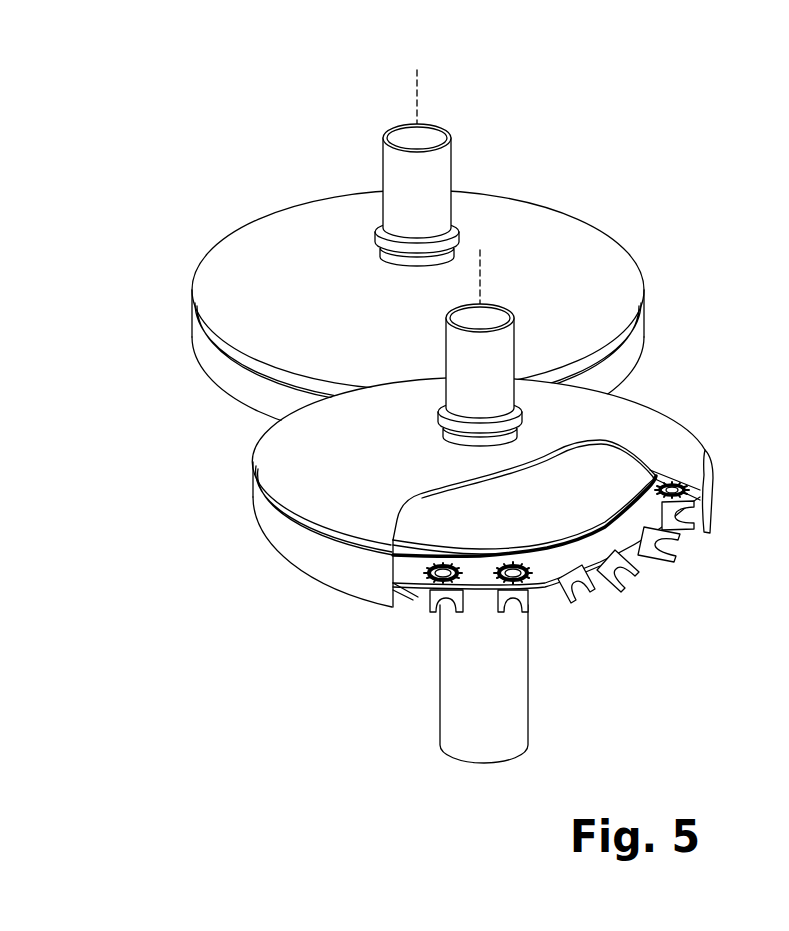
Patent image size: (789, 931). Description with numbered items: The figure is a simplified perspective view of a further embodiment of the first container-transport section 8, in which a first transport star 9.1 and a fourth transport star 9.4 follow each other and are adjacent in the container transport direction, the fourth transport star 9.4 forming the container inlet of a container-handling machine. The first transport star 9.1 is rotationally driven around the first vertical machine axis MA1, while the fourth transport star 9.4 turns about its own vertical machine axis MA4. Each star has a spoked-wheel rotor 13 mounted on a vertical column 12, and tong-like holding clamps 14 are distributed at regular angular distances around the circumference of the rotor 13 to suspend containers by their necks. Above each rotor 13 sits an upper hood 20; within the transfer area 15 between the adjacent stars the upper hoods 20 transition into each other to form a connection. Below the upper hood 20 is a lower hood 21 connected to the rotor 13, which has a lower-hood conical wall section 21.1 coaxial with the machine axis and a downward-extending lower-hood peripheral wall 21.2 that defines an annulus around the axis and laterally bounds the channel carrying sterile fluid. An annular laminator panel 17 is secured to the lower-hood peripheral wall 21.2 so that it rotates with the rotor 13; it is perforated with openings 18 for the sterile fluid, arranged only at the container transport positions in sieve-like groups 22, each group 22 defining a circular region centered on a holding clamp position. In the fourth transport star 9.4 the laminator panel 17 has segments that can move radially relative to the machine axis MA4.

The first container-transport section 8 is at (672, 169).
The first transport star 9.1 is at (418, 259).
The fourth transport star 9.4 is at (241, 566).
The vertical column 12 is at (455, 643).
The spoked-wheel rotor 13 is at (640, 606).
The holding clamps 14 is at (668, 552).
The transfer area 15 is at (731, 264).
The laminator panel 17 is at (466, 572).
The openings 18 is at (530, 566).
The upper hood 20 is at (530, 206).
The lower hood 21 is at (426, 496).
The lower-hood conical wall section 21.1 is at (549, 484).
The lower-hood peripheral wall 21.2 is at (588, 568).
The group of openings 22 is at (513, 541).
The first vertical machine axis MA1 is at (437, 168).
The third vertical machine axis MA4 is at (499, 348).